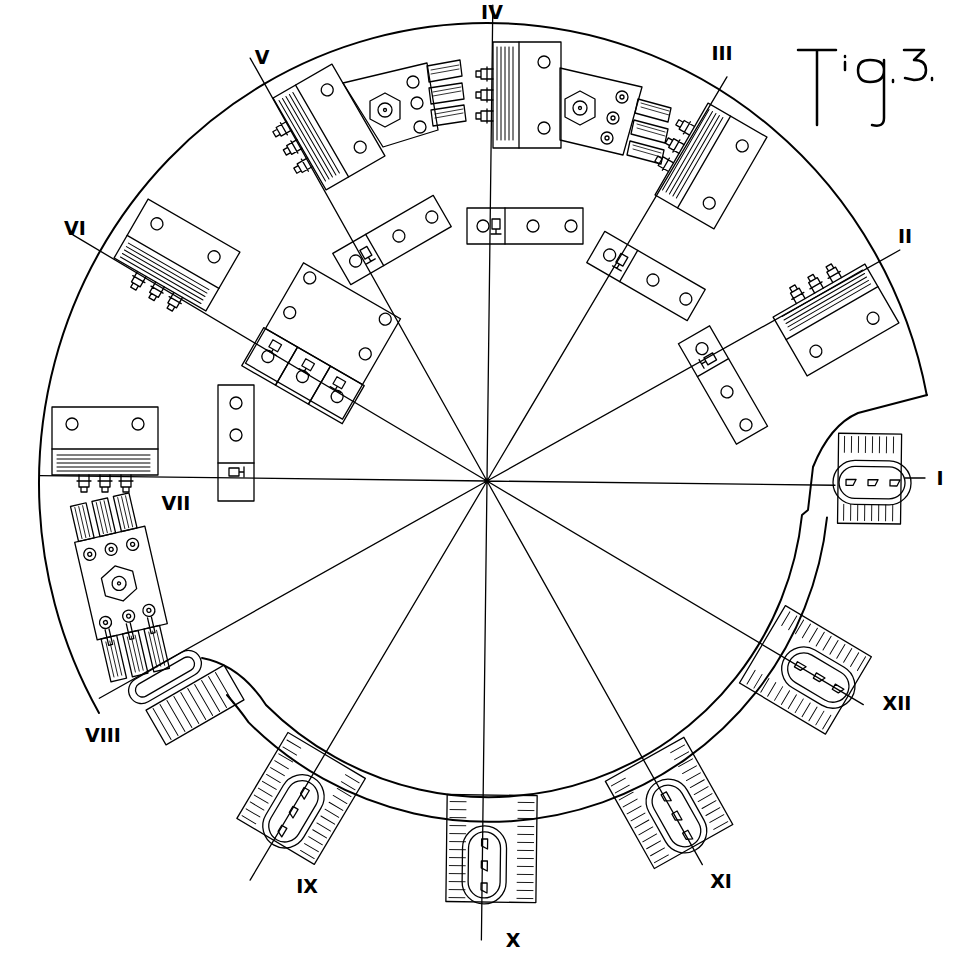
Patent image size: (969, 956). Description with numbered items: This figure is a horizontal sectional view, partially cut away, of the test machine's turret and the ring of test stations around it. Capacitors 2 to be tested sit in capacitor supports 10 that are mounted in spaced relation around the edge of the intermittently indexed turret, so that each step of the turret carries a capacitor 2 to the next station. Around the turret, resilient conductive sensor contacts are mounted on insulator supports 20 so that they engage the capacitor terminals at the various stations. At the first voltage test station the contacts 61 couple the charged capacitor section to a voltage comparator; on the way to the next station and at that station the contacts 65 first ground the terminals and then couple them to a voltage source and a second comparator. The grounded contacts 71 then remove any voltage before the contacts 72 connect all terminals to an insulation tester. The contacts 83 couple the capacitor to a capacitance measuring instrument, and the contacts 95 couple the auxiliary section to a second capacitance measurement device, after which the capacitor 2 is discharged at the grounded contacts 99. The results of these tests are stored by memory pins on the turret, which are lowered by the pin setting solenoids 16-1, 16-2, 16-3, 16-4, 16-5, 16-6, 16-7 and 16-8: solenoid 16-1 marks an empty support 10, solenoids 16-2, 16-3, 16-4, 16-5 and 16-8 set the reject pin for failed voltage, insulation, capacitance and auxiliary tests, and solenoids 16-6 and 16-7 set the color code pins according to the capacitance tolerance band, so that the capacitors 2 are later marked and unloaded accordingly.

The capacitor 2 is at (873, 487).
The capacitor support 10 is at (893, 440).
The memory solenoid 16-1 is at (692, 362).
The memory pin activating solenoid 16-2 is at (614, 270).
The memory pin solenoid 16-3 is at (530, 240).
The reject pin solenoid 16-4 is at (405, 246).
The pin setting solenoid 16-5 is at (262, 357).
The pin set solenoid 16-6 is at (323, 367).
The pin set solenoid 16-7 is at (348, 393).
The memory pin reject solenoid 16-8 is at (246, 468).
The insulator support 20 is at (865, 285).
The contacts 61 is at (718, 112).
The contacts 65 is at (528, 62).
The grounded contacts 71 is at (453, 75).
The contacts 72 is at (315, 86).
The contacts 83 is at (175, 231).
The contacts 95 is at (116, 414).
The grounded contacts 99 is at (164, 640).